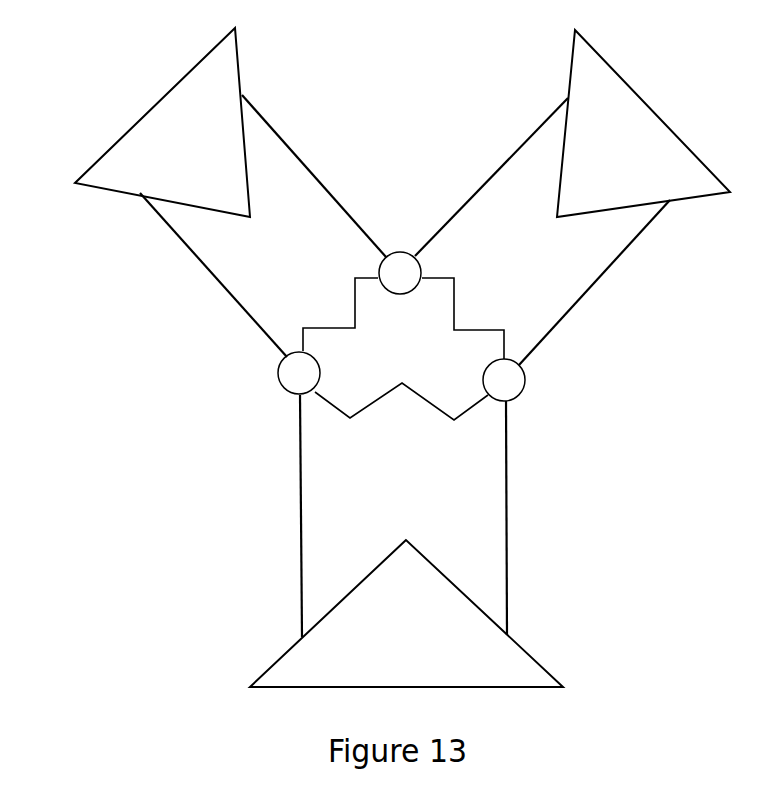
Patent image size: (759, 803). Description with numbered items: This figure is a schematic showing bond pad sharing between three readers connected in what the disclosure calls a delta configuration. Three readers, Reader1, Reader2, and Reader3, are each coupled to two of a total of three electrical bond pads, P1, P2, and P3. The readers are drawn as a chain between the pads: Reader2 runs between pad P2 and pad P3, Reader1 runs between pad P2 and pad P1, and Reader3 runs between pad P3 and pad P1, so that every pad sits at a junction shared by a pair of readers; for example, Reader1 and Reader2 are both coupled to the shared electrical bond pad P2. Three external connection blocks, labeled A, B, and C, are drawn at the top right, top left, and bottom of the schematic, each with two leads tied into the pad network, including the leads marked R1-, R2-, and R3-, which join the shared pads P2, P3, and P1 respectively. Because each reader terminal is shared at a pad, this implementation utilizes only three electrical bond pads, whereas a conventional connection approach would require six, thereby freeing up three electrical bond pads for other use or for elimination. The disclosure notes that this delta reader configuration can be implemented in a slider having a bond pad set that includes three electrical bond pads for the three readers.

The triangular antenna A is at (643, 123).
The triangular antenna B is at (162, 122).
The triangular antenna C is at (406, 613).
The electrical bond pad P1 is at (504, 380).
The electrical bond pad P2 is at (400, 273).
The electrical bond pad P3 is at (299, 373).
The reader 1 negative terminal lead R1- is at (491, 154).
The reader 2 negative terminal lead R2- is at (188, 275).
The reader 3 negative terminal lead R3- is at (546, 520).
The reader Reader1 is at (482, 318).
The reader Reader2 is at (312, 310).
The reader Reader3 is at (401, 423).